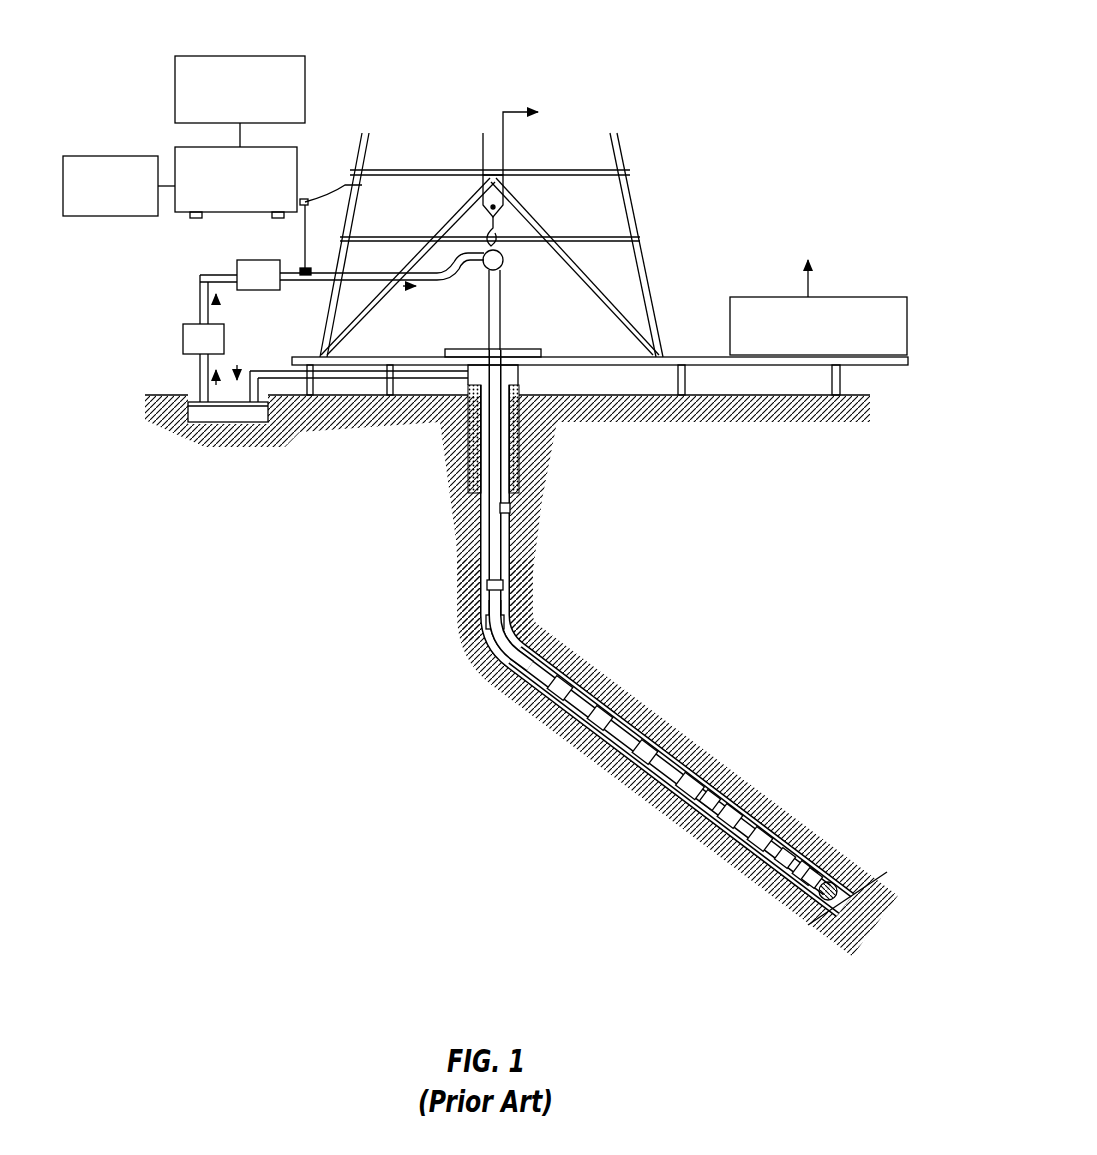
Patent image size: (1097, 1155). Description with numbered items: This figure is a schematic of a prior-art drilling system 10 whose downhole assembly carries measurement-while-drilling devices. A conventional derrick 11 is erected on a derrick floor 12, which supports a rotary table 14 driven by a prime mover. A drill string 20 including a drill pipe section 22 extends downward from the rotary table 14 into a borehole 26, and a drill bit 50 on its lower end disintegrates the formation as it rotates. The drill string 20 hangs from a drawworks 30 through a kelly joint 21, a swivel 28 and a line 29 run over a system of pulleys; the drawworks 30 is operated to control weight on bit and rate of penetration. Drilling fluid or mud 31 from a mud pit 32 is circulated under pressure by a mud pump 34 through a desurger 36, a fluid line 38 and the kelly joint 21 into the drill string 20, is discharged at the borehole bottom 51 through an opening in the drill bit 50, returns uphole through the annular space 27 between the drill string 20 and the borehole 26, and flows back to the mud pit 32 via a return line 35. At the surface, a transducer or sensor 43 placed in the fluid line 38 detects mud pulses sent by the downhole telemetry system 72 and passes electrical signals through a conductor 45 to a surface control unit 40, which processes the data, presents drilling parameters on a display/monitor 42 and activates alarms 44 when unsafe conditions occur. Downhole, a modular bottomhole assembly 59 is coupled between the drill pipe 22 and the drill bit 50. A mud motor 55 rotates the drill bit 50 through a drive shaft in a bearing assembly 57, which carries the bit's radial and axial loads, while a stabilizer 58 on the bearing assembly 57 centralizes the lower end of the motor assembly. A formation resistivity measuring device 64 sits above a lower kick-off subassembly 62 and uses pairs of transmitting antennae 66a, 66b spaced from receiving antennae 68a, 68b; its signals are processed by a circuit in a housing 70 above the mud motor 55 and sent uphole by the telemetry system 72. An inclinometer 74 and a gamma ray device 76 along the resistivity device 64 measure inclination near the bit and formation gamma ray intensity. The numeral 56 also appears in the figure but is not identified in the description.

The drilling system 10 is at (685, 58).
The derrick 11 is at (648, 232).
The derrick floor 12 is at (672, 355).
The rotary table 14 is at (520, 347).
The drill string 20 is at (513, 513).
The kelly joint 21 is at (502, 302).
The drill pipe section 22 is at (487, 573).
The borehole 26 is at (523, 627).
The annular space 27 is at (533, 647).
The swivel 28 is at (487, 267).
The line 29 is at (505, 158).
The drawworks 30 is at (842, 297).
The drilling fluid 31 is at (193, 413).
The mud pit 32 is at (253, 427).
The mud pump 34 is at (183, 338).
The return line 35 is at (338, 382).
The desurger 36 is at (253, 260).
The fluid line 38 is at (300, 287).
The surface control unit 40 is at (297, 148).
The display/monitor 42 is at (258, 55).
The sensor 43 is at (305, 265).
The alarms 44 is at (95, 155).
The conductor 45 is at (349, 188).
The drill bit 50 is at (847, 875).
The borehole bottom 51 is at (810, 930).
The mud motor 55 is at (590, 690).
The annulus 56 is at (633, 717).
The bearing assembly 57 is at (740, 868).
The stabilizer 58 is at (813, 853).
The downhole subassembly 59 is at (640, 645).
The lower kick-off subassembly 62 is at (783, 835).
The formation resistivity measuring device 64 is at (697, 813).
The transmitting antenna 66a is at (633, 783).
The transmitting antenna 66b is at (705, 843).
The receiving antenna 68a is at (673, 797).
The receiving antenna 68b is at (713, 772).
The housing 70 is at (510, 667).
The telemetry system 72 is at (495, 620).
The inclinometer 74 is at (737, 790).
The gamma ray device 76 is at (760, 803).